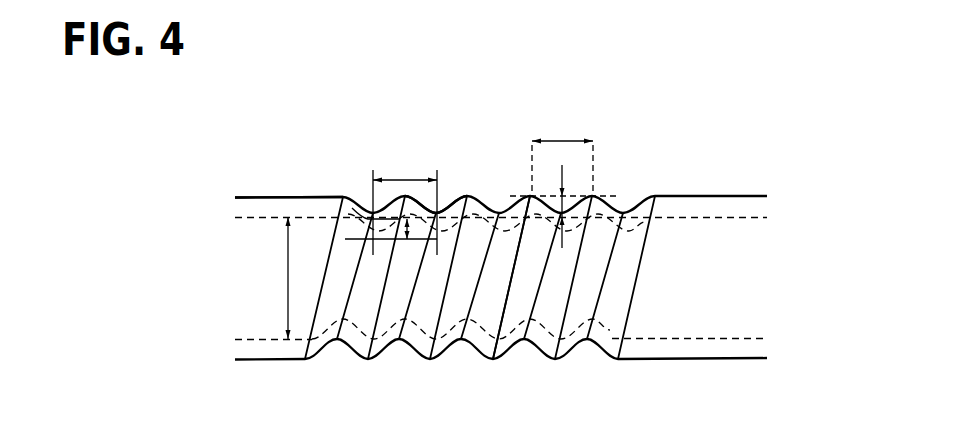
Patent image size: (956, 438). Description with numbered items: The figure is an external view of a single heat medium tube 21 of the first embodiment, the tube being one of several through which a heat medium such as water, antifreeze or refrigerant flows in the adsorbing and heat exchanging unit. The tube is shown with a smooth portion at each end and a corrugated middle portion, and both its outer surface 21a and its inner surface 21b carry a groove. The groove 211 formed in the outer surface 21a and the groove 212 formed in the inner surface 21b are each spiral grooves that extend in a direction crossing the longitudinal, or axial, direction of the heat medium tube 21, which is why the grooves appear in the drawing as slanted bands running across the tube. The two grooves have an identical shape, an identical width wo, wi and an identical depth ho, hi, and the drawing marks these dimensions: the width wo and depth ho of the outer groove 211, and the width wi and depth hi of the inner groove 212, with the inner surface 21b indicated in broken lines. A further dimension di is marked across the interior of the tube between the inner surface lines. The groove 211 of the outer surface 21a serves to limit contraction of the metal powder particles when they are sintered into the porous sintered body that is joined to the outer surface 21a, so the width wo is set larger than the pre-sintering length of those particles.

The heat medium tube 21 is at (270, 169).
The outer surface 21a is at (248, 197).
The inner surface 21b is at (243, 219).
The groove of the outer surface 211 is at (544, 284).
The groove of the inner surface 212 is at (443, 198).
The width of the groove of the inner surface wi is at (398, 178).
The width of the groove of the outer surface wo is at (565, 141).
The depth of the groove of the inner surface hi is at (356, 212).
The depth of the groove of the outer surface ho is at (563, 196).
The inner diameter di is at (288, 278).